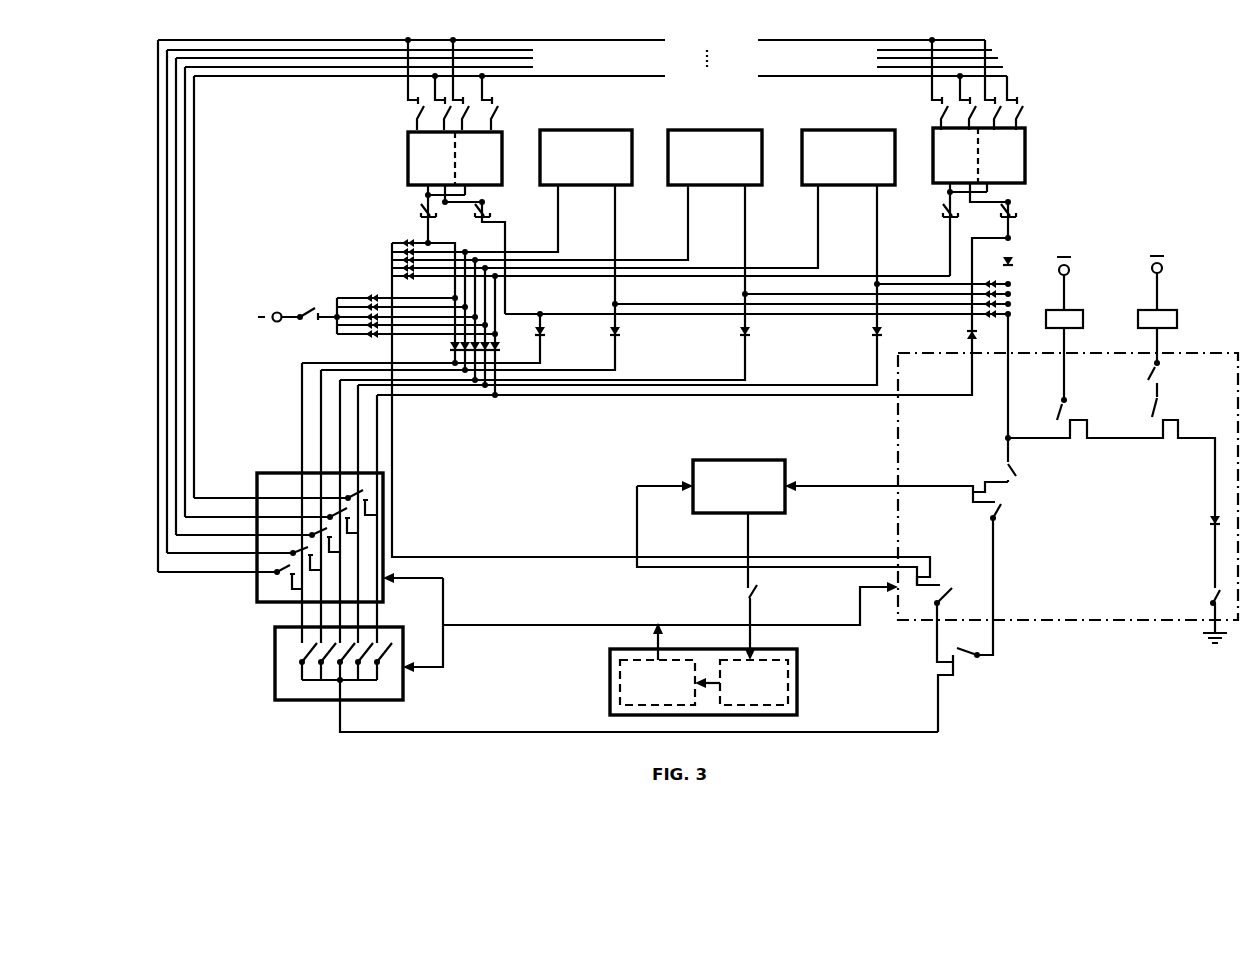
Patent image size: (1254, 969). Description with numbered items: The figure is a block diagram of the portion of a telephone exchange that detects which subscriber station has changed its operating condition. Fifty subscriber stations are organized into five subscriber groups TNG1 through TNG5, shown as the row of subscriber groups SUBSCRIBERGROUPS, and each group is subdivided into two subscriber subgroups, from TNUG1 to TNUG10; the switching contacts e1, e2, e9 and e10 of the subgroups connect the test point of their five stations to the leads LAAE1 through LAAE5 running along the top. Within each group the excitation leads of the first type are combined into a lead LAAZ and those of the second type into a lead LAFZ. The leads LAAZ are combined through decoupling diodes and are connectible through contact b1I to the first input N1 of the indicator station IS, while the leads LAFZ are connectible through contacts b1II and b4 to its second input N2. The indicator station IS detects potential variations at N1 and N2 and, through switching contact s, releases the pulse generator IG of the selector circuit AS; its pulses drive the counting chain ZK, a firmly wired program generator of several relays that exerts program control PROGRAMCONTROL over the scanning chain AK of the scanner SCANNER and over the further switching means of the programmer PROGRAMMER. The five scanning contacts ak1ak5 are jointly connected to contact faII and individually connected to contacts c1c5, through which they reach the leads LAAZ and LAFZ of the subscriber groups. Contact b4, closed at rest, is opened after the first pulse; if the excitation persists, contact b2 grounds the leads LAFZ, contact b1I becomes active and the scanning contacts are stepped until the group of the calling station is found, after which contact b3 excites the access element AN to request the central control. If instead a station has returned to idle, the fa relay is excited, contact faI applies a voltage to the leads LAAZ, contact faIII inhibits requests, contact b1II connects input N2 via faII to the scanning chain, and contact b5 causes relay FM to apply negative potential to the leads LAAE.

The lead LAAE LAAE1 is at (571, 302).
The lead LAAE LAAE5 is at (587, 301).
The switching contacts e I ... e V e1 is at (389, 110).
The switching contacts e I ... e V e2 is at (519, 110).
The switching contacts e I ... e V e9 is at (914, 110).
The switching contacts e I ... e V e10 is at (1051, 110).
The subscriber group TNG1 is at (426, 158).
The subscriber subgroup TNUG1 is at (393, 162).
The subscriber group TNG5 is at (1006, 155).
The subscriber subgroup TNUG10 is at (1035, 160).
The subscriber groups SUBSCRIBERGROUPS is at (812, 205).
The lead LAAZ is at (421, 209).
The lead LAFZ is at (486, 209).
The switching contact fa I faI is at (296, 326).
The scanner SCANNER is at (526, 602).
The contacts c1 ... c5 c1c5 is at (263, 578).
The scanning chain AK is at (553, 679).
The scanning contacts ak1 I ... ak5 I ak1ak5 is at (312, 684).
The program control PROGRAMCONTROL is at (722, 621).
The indicator station IS is at (728, 461).
The first input N1 is at (668, 473).
The second input N2 is at (821, 482).
The switching contact s is at (754, 594).
The selector circuit AS is at (736, 707).
The counting chain ZK is at (657, 682).
The pulse generator IG is at (860, 712).
The programmer PROGRAMMER is at (1068, 494).
The contact b1 I b1I is at (952, 582).
The contact fa II faII is at (962, 662).
The contact b1 II b1II is at (1003, 512).
The switching contact b4 is at (1012, 470).
The access element AN is at (1083, 319).
The contact b3 is at (1066, 402).
The relay FM is at (1177, 319).
The switching contact b5 is at (1158, 368).
The contact fa III faIII is at (1160, 400).
The switching contact b2 is at (1212, 598).